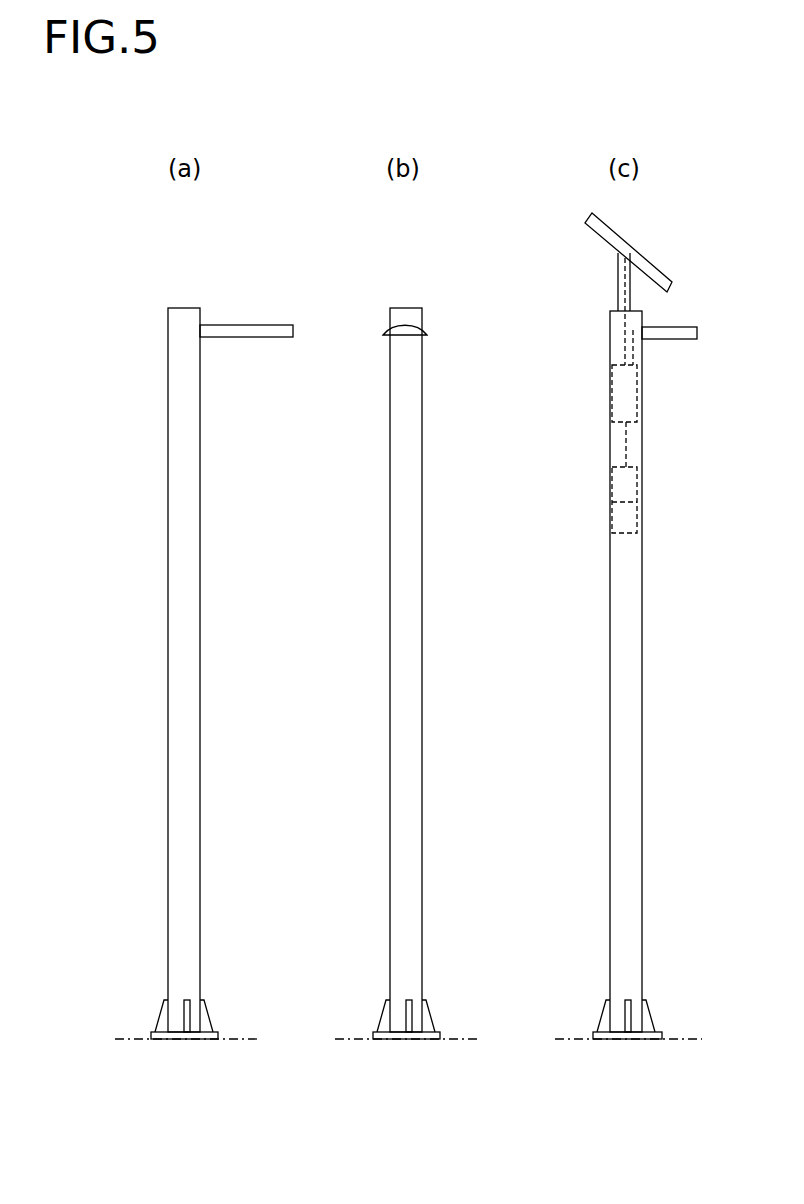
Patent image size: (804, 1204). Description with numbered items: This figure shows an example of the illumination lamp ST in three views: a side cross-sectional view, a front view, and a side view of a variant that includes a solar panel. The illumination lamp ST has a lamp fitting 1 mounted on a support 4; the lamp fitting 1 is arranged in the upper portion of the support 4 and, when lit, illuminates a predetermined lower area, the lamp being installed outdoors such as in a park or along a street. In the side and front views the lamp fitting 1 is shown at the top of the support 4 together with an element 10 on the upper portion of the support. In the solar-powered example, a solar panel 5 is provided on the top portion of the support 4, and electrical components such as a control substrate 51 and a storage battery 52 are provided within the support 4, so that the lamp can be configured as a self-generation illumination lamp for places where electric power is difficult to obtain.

The illumination lamp ST is at (145, 312).
The lamp fitting 1 is at (234, 305).
The support 4 is at (186, 625).
The lighting fixture / arm 10 is at (277, 325).
The solar panel 5 is at (627, 237).
The control substrate 51 is at (612, 385).
The storage battery 52 is at (612, 517).